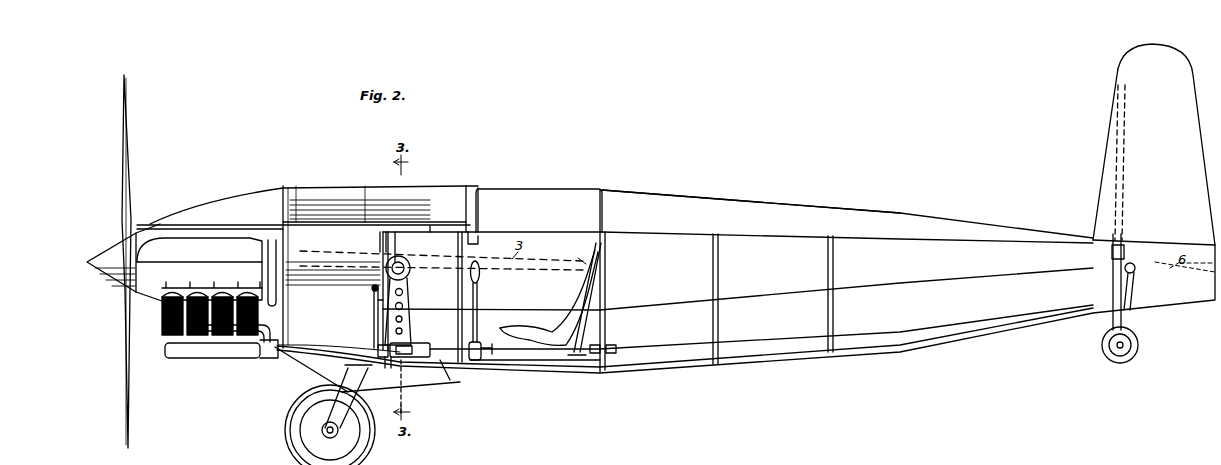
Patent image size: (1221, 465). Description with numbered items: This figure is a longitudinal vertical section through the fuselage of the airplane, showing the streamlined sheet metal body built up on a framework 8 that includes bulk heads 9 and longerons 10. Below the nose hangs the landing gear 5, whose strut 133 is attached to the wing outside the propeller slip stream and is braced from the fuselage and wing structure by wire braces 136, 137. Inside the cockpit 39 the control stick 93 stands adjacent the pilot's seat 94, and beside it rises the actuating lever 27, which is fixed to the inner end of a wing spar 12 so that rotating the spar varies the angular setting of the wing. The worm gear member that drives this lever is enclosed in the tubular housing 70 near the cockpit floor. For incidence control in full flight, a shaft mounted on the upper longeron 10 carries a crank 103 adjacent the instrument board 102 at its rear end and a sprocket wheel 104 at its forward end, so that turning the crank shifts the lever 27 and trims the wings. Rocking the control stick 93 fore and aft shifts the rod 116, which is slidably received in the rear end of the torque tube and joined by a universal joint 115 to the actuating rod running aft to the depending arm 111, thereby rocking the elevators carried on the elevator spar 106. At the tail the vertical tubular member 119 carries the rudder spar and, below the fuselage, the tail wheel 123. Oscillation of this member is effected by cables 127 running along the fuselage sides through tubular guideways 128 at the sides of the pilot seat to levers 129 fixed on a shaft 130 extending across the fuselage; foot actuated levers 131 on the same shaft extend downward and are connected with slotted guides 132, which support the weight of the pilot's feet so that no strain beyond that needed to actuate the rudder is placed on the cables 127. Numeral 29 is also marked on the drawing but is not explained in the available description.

The landing gear 5 is at (362, 430).
The framework 8 is at (722, 232).
The bulk heads 9 is at (832, 258).
The longerons 10 is at (868, 235).
The spar 12 is at (407, 243).
The actuating lever 27 is at (409, 293).
The bracket 29 is at (436, 244).
The cockpit 39 is at (446, 372).
The tubular housing 70 is at (411, 344).
The control stick 93 is at (478, 300).
The pilot's seat 94 is at (586, 300).
The instrument board 102 is at (470, 190).
The crank 103 is at (478, 238).
The sprocket wheel 104 is at (380, 242).
The elevator spar 106 is at (1128, 272).
The depending arm 111 is at (1131, 288).
The universal joint 115 is at (610, 348).
The rod 116 is at (540, 358).
The vertical tubular member 119 is at (1124, 255).
The tail wheel 123 is at (1130, 340).
The cables 127 is at (850, 292).
The tubular guideways 128 is at (533, 318).
The levers 129 is at (378, 310).
The shaft 130 is at (374, 296).
The foot actuated levers 131 is at (381, 344).
The slotted guides 132 is at (400, 360).
The strut 133 is at (355, 380).
The wire brace 136 is at (311, 369).
The wire brace 137 is at (410, 375).